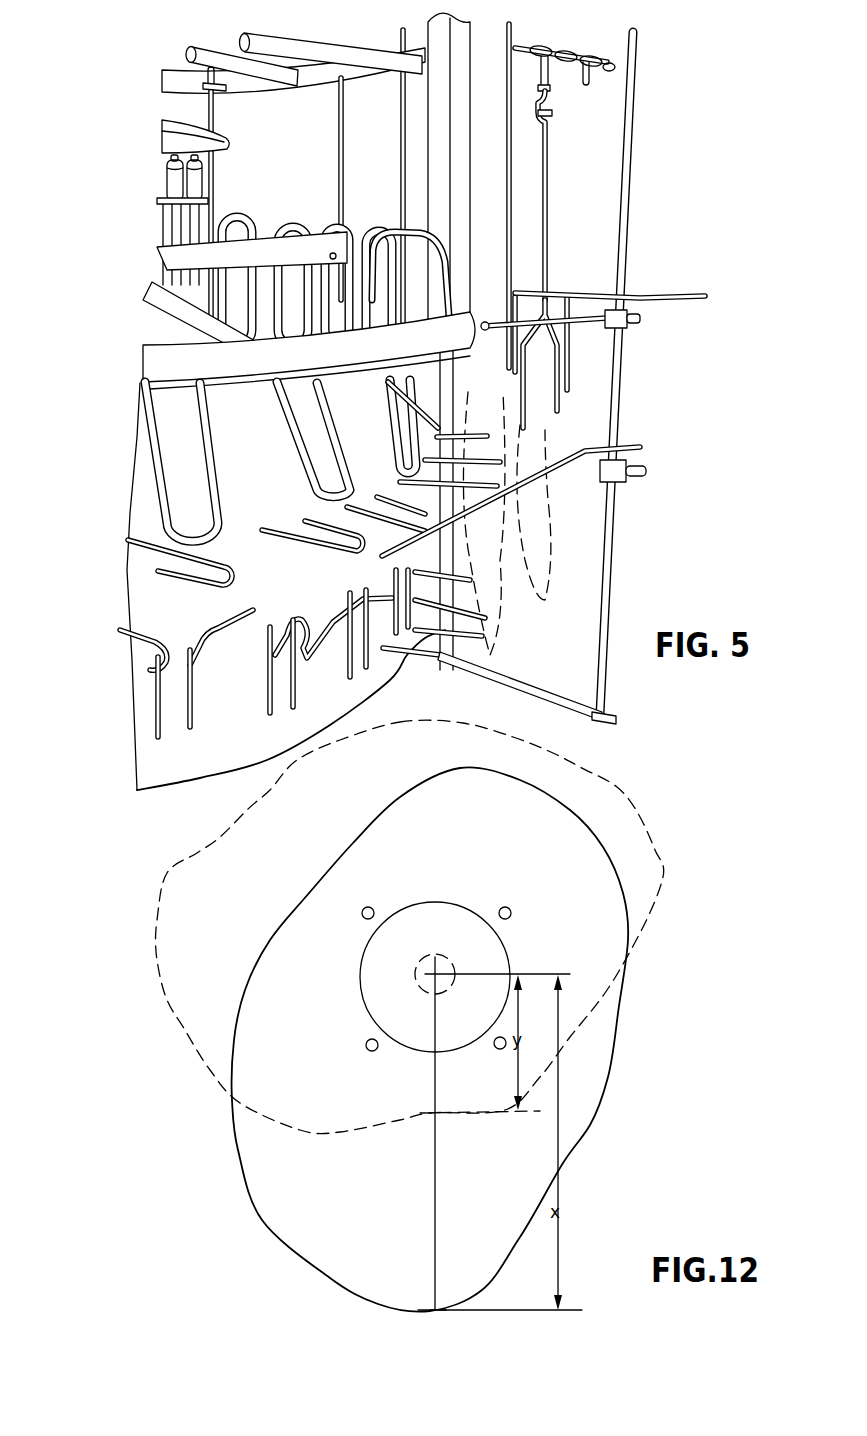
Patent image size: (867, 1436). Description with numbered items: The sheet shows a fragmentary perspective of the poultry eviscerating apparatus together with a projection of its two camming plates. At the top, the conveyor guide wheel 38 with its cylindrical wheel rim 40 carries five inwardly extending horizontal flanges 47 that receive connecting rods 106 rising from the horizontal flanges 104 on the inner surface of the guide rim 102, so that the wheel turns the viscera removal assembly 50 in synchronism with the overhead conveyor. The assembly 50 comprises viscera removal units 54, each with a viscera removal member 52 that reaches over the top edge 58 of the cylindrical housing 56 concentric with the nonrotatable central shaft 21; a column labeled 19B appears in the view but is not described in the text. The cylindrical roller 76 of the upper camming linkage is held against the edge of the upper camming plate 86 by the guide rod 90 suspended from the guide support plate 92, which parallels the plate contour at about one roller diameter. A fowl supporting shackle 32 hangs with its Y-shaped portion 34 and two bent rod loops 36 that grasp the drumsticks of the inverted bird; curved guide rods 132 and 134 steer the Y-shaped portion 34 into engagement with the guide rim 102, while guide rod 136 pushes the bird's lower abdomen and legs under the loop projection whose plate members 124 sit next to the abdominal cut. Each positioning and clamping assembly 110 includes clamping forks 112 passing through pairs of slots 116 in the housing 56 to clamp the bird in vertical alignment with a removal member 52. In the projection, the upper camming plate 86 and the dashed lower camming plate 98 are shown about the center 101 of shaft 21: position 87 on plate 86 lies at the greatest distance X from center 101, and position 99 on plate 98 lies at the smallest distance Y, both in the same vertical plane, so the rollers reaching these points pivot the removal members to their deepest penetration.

In FIG. 5, the column 19B is at (466, 28).
In FIG. 5, the conveyor guide wheel 38 is at (297, 45).
In FIG. 5, the wheel rim 40 is at (323, 80).
In FIG. 5, the horizontal flanges 47 is at (225, 90).
In FIG. 5, the connecting rods 106 is at (208, 108).
In FIG. 5, the guide support plate 92 is at (228, 147).
In FIG. 5, the cylindrical roller 76 is at (192, 178).
In FIG. 5, the guide rod 90 is at (210, 200).
In FIG. 5, the viscera removal units 54 is at (275, 255).
In FIG. 5, the viscera removal assembly 50 is at (122, 216).
In FIG. 5, the horizontal flanges 104 is at (447, 292).
In FIG. 5, the fowl supporting shackle 32 is at (548, 170).
In FIG. 5, the curved guide rod 132 is at (587, 290).
In FIG. 5, the curved guide rod 134 is at (700, 292).
In FIG. 5, the guide rim 102 is at (362, 361).
In FIG. 5, the Y-shaped portion 34 is at (578, 338).
In FIG. 5, the bent rod loops 36 is at (580, 366).
In FIG. 5, the viscera removal member 52 is at (290, 410).
In FIG. 5, the top edge 58 is at (345, 373).
In FIG. 5, the housing 56 is at (282, 494).
In FIG. 5, the plate members 124 is at (400, 497).
In FIG. 5, the guide rod 136 is at (560, 473).
In FIG. 5, the clamping forks 112 is at (273, 647).
In FIG. 5, the slots 116 is at (155, 727).
In FIG. 5, the positioning and clamping assembly 110 is at (127, 788).
In FIG. 12, the upper camming plate 86 is at (587, 1113).
In FIG. 12, the lower camming plate 98 is at (665, 871).
In FIG. 12, the center 101 is at (478, 946).
In FIG. 12, the nonrotatable central shaft 21 is at (431, 955).
In FIG. 12, the position on lower camming plate 99 is at (433, 1112).
In FIG. 12, the position on upper camming plate 87 is at (430, 1311).